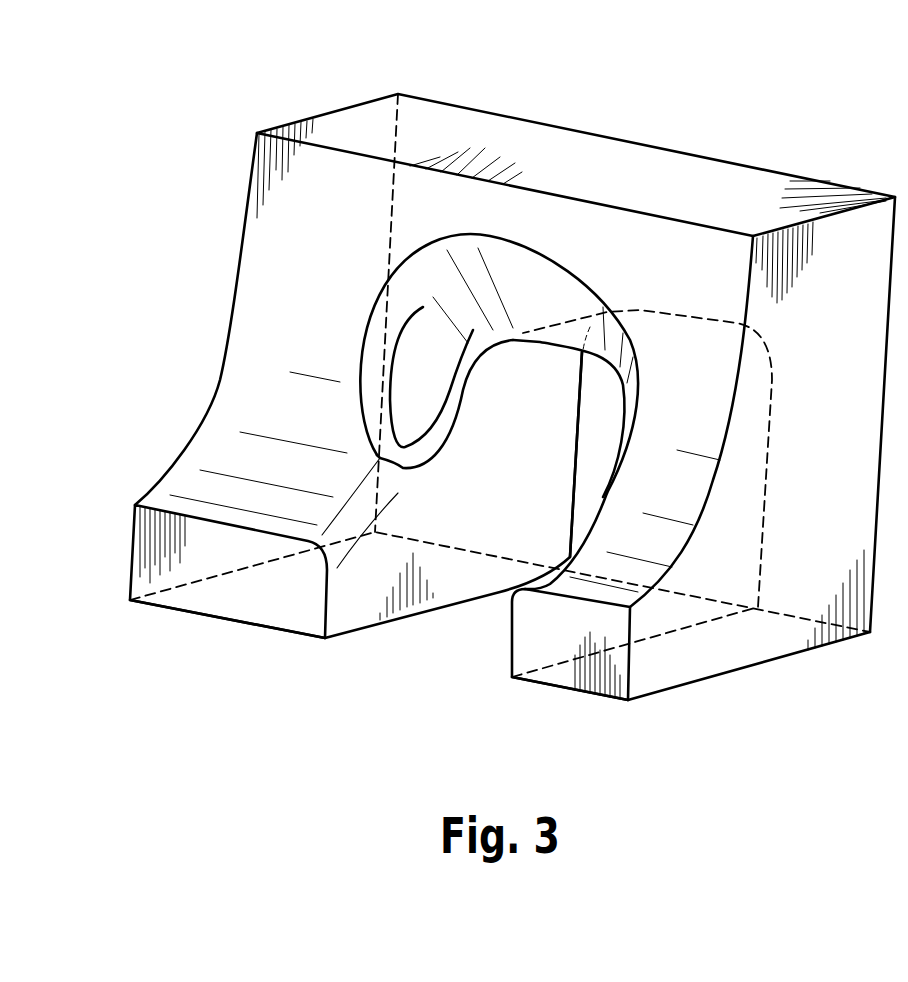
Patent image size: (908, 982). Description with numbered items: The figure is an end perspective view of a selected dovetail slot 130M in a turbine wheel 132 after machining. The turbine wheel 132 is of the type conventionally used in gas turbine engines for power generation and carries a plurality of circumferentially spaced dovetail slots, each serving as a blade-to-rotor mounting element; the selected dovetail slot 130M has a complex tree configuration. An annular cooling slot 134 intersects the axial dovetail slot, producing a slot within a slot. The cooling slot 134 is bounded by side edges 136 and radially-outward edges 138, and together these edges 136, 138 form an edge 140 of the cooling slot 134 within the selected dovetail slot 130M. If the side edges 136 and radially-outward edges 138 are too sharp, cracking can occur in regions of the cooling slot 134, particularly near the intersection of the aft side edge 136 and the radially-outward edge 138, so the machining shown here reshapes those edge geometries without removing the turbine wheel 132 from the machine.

The selected dovetail slot 130M is at (334, 279).
The turbine wheel 132 is at (415, 762).
The cooling slot 134 is at (410, 664).
The side edges 136 is at (367, 507).
The radially-outward edges 138 is at (542, 268).
The edge 140 is at (433, 196).